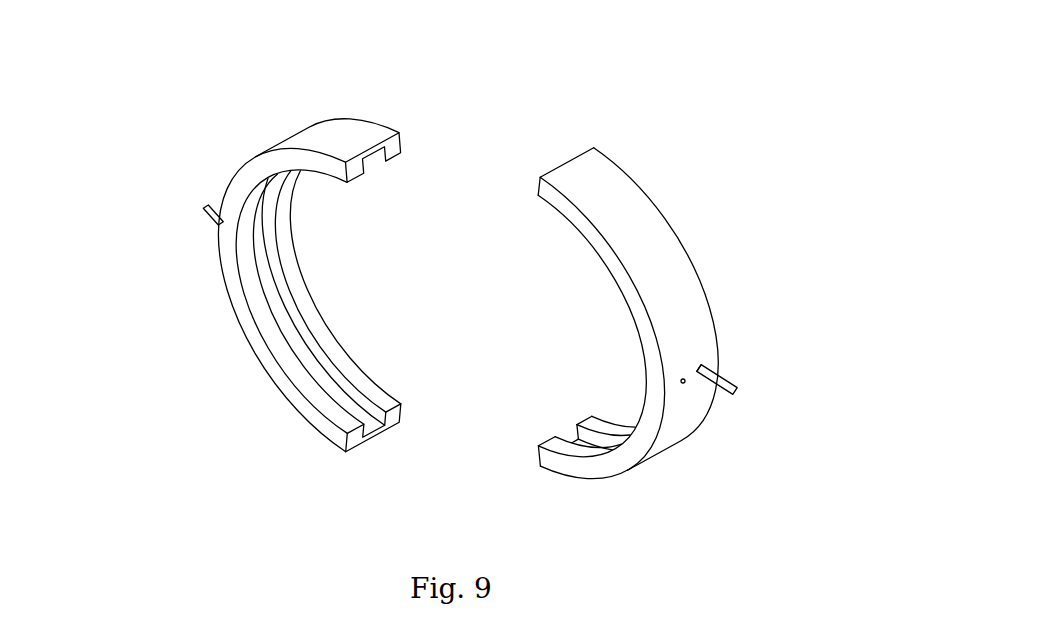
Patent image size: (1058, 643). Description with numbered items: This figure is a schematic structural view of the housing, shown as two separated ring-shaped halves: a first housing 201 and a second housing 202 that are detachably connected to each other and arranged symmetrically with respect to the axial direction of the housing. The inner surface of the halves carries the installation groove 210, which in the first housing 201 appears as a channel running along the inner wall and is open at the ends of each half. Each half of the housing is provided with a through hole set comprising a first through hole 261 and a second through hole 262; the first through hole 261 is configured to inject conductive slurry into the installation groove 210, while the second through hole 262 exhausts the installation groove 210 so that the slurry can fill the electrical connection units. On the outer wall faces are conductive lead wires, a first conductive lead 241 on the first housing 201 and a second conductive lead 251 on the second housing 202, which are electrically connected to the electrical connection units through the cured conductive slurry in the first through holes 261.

The first housing 201 is at (600, 183).
The second housing 202 is at (332, 137).
The installation groove 210 is at (363, 418).
The first conductive lead 241 is at (727, 383).
The second conductive lead 251 is at (208, 225).
The first through hole 261 is at (258, 223).
The second through hole 262 is at (697, 372).